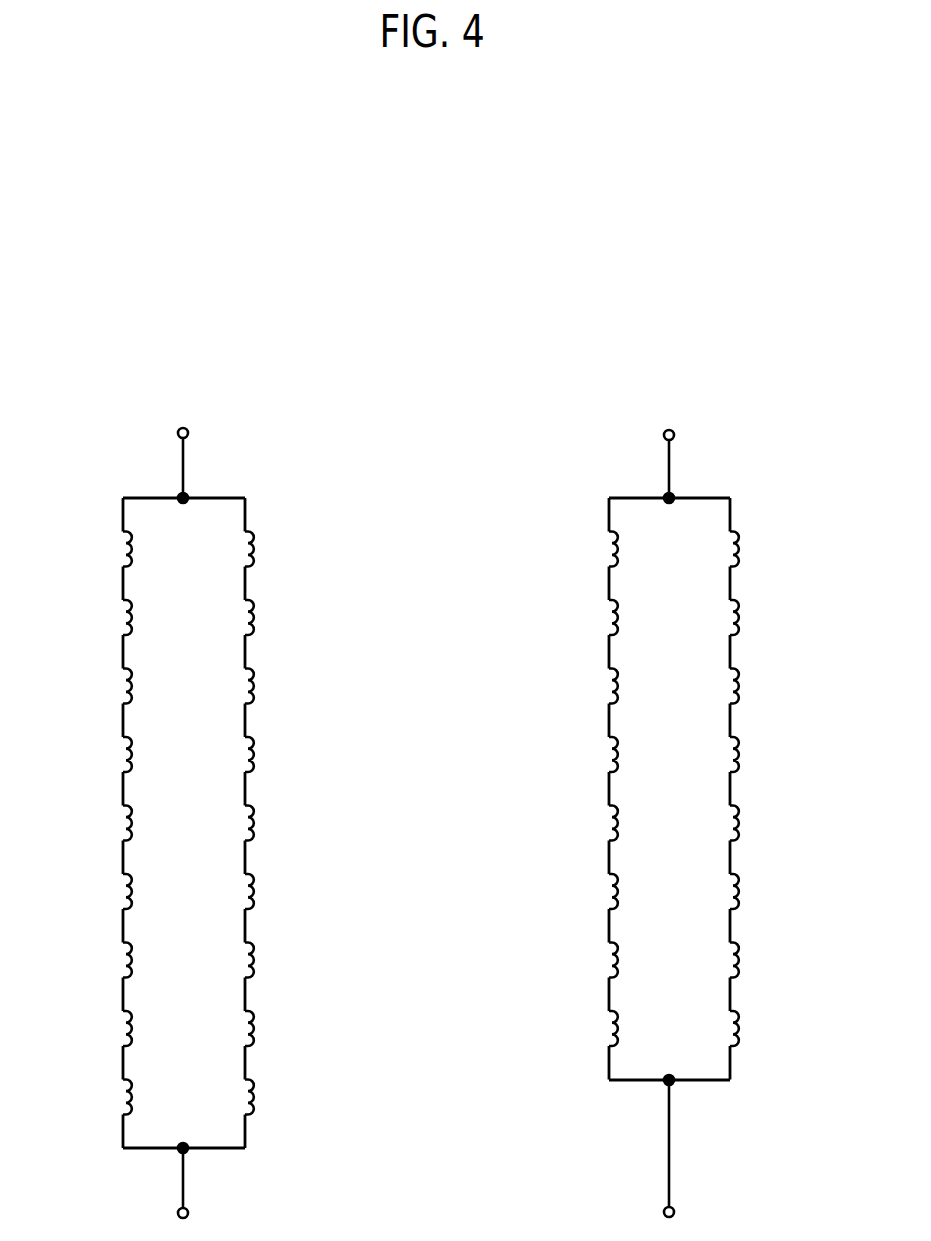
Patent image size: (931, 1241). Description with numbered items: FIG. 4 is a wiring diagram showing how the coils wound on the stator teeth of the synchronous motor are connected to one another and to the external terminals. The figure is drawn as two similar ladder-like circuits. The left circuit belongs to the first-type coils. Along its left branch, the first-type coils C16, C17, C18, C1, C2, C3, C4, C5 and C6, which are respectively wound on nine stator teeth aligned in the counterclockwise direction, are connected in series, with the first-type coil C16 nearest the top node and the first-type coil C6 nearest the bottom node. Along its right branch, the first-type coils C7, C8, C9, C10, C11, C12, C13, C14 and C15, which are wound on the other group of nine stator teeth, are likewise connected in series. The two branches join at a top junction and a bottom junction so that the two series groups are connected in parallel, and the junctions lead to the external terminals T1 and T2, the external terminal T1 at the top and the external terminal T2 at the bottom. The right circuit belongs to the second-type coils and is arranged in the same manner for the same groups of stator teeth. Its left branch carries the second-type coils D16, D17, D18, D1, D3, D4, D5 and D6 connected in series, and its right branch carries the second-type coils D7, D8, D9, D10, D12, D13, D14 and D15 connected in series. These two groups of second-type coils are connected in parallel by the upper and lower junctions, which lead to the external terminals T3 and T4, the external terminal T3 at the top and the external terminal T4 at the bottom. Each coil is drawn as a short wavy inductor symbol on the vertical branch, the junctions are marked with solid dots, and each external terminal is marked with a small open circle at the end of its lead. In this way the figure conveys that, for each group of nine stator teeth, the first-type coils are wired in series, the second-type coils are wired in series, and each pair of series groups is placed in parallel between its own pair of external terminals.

The external terminal T1 is at (204, 458).
The external terminal T2 is at (204, 1188).
The external terminal T3 is at (690, 459).
The external terminal T4 is at (690, 1153).
The first-type coil C1 is at (98, 755).
The first-type coil C2 is at (98, 824).
The first-type coil C3 is at (98, 892).
The first-type coil C4 is at (98, 961).
The first-type coil C5 is at (98, 1029).
The first-type coil C6 is at (98, 1098).
The first-type coil C7 is at (279, 550).
The first-type coil C8 is at (279, 618).
The first-type coil C9 is at (279, 687).
The first-type coil C10 is at (283, 755).
The first-type coil C11 is at (283, 824).
The first-type coil C12 is at (283, 892).
The first-type coil C13 is at (283, 961).
The first-type coil C14 is at (283, 1029).
The first-type coil C15 is at (283, 1098).
The first-type coil C16 is at (94, 550).
The first-type coil C17 is at (94, 618).
The first-type coil C18 is at (94, 687).
The second-type coil D1 is at (583, 755).
The second-type coil D3 is at (583, 824).
The second-type coil D4 is at (583, 892).
The second-type coil D5 is at (583, 961).
The second-type coil D6 is at (583, 1029).
The second-type coil D7 is at (765, 550).
The second-type coil D8 is at (765, 618).
The second-type coil D9 is at (765, 687).
The second-type coil D10 is at (769, 755).
The second-type coil D12 is at (769, 824).
The second-type coil D13 is at (769, 892).
The second-type coil D14 is at (769, 961).
The second-type coil D15 is at (769, 1029).
The second-type coil D16 is at (579, 550).
The second-type coil D17 is at (579, 618).
The second-type coil D18 is at (579, 687).